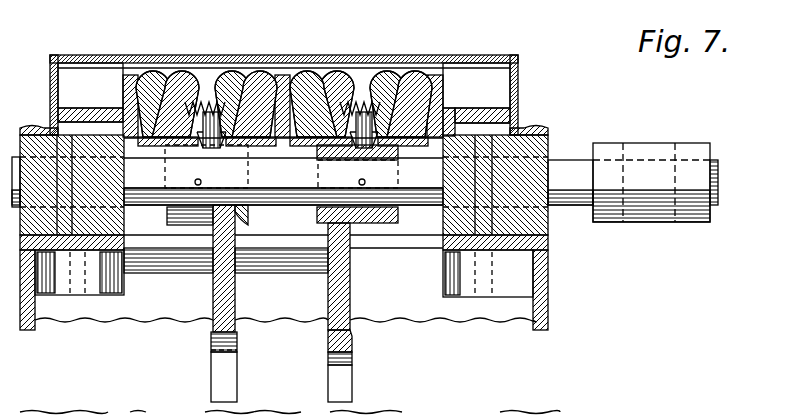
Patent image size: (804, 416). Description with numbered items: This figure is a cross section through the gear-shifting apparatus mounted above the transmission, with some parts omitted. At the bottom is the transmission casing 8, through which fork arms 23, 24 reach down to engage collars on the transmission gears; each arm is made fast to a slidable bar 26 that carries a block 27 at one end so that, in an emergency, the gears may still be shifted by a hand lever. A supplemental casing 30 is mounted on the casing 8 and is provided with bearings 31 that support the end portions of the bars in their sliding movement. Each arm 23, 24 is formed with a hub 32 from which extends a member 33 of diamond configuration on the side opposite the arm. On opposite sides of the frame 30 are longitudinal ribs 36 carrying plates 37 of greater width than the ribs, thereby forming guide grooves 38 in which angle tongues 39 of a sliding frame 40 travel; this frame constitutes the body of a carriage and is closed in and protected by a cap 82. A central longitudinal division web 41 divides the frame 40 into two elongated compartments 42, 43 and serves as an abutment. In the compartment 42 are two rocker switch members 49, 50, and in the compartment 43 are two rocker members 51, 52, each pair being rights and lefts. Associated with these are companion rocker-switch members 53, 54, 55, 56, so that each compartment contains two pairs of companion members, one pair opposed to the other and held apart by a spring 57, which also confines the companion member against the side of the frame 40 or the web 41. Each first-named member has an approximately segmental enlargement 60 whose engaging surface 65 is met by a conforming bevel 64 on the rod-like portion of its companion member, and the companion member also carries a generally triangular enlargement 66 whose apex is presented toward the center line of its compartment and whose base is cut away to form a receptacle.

The transmission casing 8 is at (548, 306).
The fork arm 23 is at (236, 292).
The fork arm 24 is at (350, 290).
The slidable bar 26 is at (227, 182).
The block 27 is at (655, 182).
The supplemental casing 30 is at (552, 152).
The bearing 31 is at (60, 283).
The hub 32 is at (193, 218).
The member 33 is at (205, 140).
The longitudinal rib 36 is at (50, 132).
The plate 37 is at (50, 112).
The guide groove 38 is at (283, 155).
The angle tongue 39 is at (284, 107).
The frame 40 is at (131, 75).
The longitudinal division web 41 is at (288, 92).
The compartment 42 is at (208, 98).
The compartment 43 is at (355, 108).
The rocker switch member 49 is at (387, 70).
The rocker switch member 50 is at (330, 100).
The rocker member 51 is at (234, 90).
The rocker member 52 is at (187, 84).
The rocker-switch member 53 is at (432, 75).
The rocker-switch member 54 is at (310, 84).
The rocker-switch member 55 is at (266, 71).
The rocker-switch member 56 is at (150, 74).
The spring 57 is at (230, 72).
The segmental enlargement 60 is at (167, 108).
The bevel 64 is at (437, 102).
The engaging surface 65 is at (371, 174).
The triangular enlargement 66 is at (142, 130).
The cap 82 is at (514, 60).